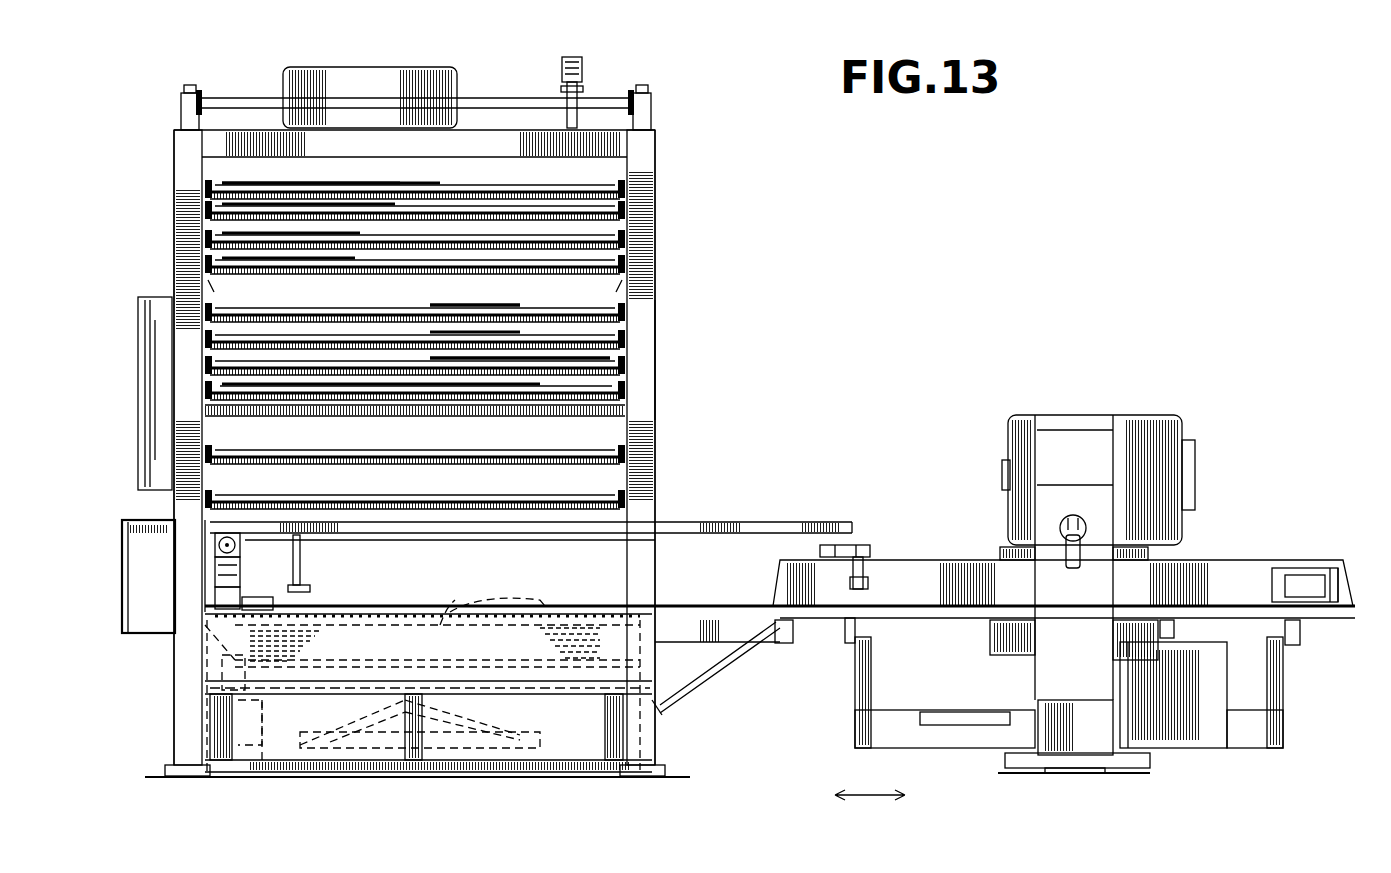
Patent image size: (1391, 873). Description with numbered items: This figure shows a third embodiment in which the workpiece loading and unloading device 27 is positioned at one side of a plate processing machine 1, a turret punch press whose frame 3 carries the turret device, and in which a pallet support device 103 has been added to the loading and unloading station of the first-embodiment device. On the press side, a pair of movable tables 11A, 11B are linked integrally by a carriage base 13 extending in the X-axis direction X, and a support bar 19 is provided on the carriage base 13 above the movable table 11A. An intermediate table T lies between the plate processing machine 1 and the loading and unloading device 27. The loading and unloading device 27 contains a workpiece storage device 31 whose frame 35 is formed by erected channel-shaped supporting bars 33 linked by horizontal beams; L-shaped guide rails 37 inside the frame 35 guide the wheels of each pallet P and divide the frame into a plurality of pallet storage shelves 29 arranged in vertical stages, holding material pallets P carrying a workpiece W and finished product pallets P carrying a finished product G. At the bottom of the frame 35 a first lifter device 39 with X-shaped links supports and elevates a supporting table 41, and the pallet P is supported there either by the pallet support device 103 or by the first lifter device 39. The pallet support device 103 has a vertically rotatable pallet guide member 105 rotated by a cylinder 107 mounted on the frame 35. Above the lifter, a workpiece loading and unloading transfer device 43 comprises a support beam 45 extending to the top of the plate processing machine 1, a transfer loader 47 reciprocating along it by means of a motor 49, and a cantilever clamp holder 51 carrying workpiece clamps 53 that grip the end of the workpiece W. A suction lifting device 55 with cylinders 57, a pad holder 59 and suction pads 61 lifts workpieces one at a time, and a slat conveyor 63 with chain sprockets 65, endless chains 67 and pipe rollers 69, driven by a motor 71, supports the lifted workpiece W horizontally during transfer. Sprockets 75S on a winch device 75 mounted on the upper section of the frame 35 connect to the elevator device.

The plate processing machine 1 is at (1204, 418).
The frame 3 is at (1090, 440).
The movable table 11A is at (912, 620).
The movable table 11B is at (1335, 622).
The carriage base 13 is at (1245, 572).
The support bar 19 is at (866, 550).
The workpiece loading and unloading device 27 is at (738, 406).
The pallet storage shelves 29 is at (205, 213).
The workpiece storage device 31 is at (668, 208).
The supporting bars 33 is at (190, 260).
The frame 35 is at (670, 346).
The guide rails 37 is at (208, 296).
The first lifter device 39 is at (340, 750).
The supporting table 41 is at (545, 695).
The workpiece loading and unloading transfer device 43 is at (222, 570).
The support beam 45 is at (736, 522).
The transfer loader 47 is at (222, 593).
The motor 49 is at (210, 540).
The clamp holder 51 is at (210, 612).
The workpiece clamps 53 is at (245, 598).
The suction lifting device 55 is at (300, 552).
The cylinders 57 is at (302, 560).
The pad holder 59 is at (240, 548).
The suction pads 61 is at (305, 592).
The slat conveyor 63 is at (205, 680).
The chain sprockets 65 is at (180, 650).
The endless chains 67 is at (458, 612).
The pipe rollers 69 is at (392, 588).
The motor 71 is at (262, 765).
The winch device 75 is at (425, 66).
The sprockets 75S is at (200, 95).
The pallet support device 103 is at (170, 720).
The pallet guide member 105 is at (600, 600).
The cylinder 107 is at (656, 710).
The pallet P is at (440, 240).
The workpiece W is at (430, 222).
The finished product G is at (530, 395).
The intermediate table T is at (713, 606).
The X-axis direction X is at (885, 795).